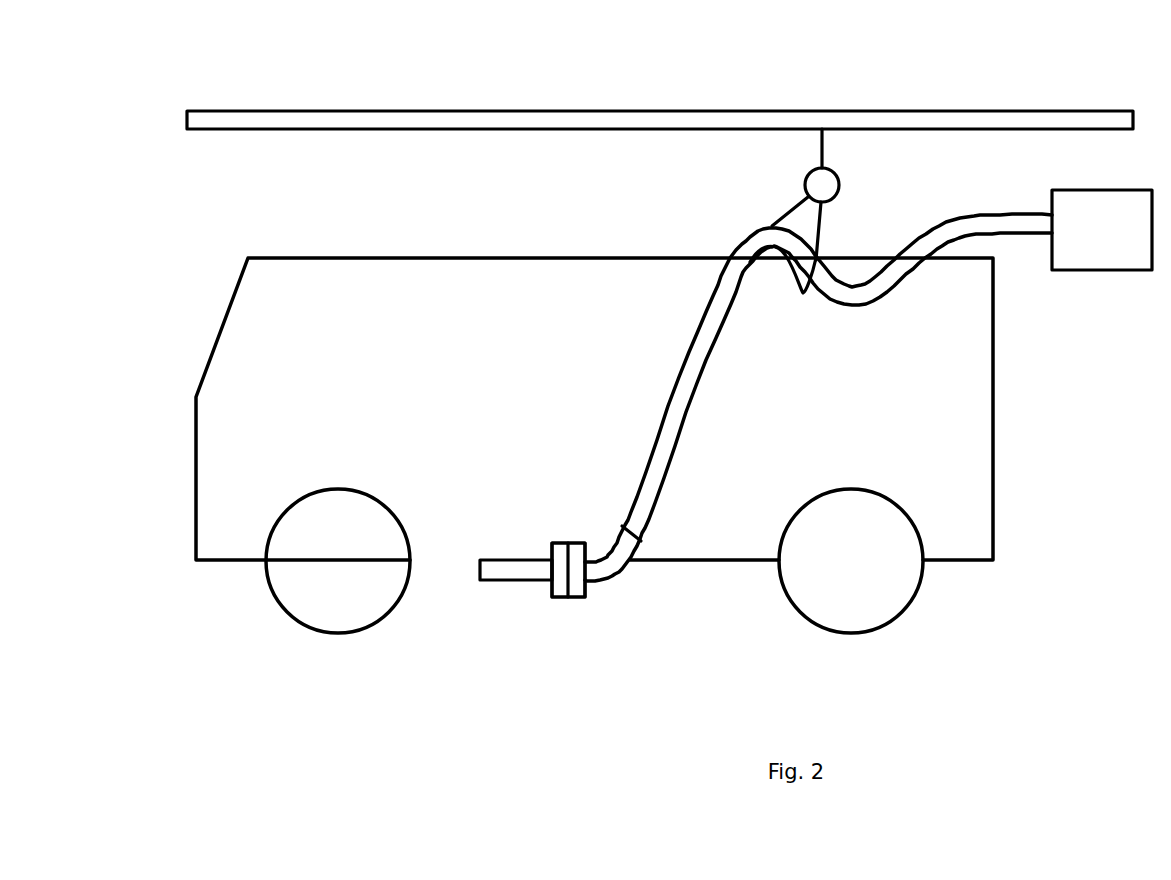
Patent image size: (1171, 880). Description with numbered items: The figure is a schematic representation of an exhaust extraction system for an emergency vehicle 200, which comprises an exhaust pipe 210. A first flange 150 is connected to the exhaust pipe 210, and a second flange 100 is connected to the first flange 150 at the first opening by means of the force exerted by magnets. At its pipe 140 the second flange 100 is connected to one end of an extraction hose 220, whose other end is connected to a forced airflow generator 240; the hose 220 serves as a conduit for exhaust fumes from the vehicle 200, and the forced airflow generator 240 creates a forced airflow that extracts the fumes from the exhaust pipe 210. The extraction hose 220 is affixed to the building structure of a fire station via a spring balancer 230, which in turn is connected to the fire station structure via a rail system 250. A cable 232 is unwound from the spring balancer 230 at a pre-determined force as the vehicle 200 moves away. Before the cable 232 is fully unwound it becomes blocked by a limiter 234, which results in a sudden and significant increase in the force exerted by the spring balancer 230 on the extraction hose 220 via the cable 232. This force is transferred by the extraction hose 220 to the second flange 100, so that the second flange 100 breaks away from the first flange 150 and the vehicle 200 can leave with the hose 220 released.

The second flange 100 is at (585, 597).
The pipe 140 is at (622, 572).
The first flange 150 is at (553, 543).
The emergency vehicle 200 is at (430, 563).
The exhaust pipe 210 is at (498, 580).
The extraction hose 220 is at (693, 405).
The spring balancer 230 is at (803, 179).
The cable 232 is at (782, 202).
The limiter 234 is at (822, 230).
The forced airflow generator 240 is at (1083, 200).
The rail system 250 is at (953, 111).